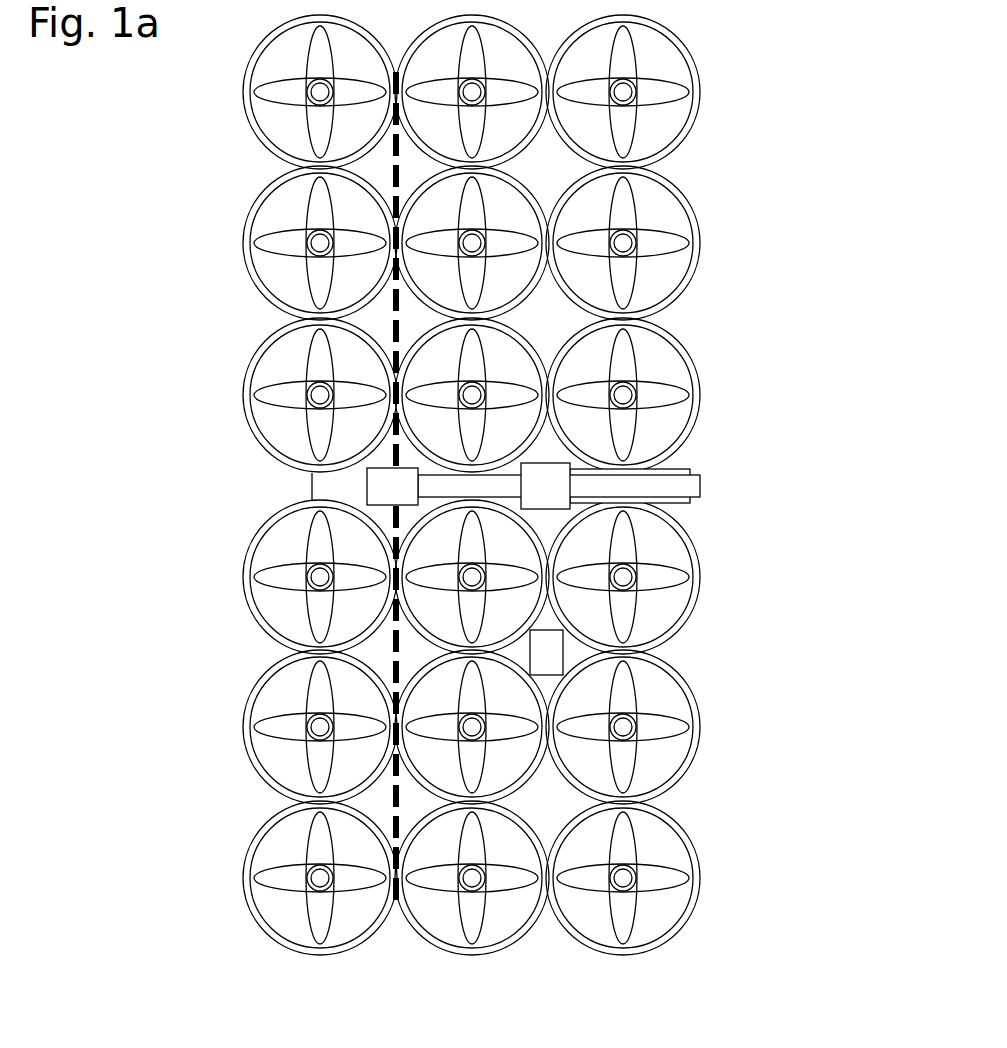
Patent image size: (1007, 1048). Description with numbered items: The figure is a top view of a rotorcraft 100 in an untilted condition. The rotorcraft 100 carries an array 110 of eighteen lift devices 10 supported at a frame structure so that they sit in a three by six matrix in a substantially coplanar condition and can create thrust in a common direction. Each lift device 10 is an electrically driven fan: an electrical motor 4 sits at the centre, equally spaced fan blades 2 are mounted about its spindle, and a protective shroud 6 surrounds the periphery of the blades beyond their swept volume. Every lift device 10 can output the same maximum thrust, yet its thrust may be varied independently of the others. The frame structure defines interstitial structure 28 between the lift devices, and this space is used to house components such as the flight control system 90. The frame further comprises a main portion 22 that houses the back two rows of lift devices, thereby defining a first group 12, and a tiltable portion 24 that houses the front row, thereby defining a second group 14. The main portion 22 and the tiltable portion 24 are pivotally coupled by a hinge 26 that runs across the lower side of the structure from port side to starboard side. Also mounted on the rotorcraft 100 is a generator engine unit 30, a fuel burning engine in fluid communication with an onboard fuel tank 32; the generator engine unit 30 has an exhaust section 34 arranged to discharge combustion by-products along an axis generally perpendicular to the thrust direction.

The rotorcraft 100 is at (755, 83).
The array 110 is at (198, 14).
The lift device 10 is at (705, 213).
The fan blades 2 is at (665, 243).
The electrical motor 4 is at (627, 250).
The protective shroud 6 is at (662, 305).
The first group 12 is at (700, 968).
The second group 14 is at (392, 968).
The main portion 22 is at (545, 810).
The tiltable portion 24 is at (239, 706).
The hinge 26 is at (393, 145).
The interstitial structure 28 is at (547, 792).
The generator engine unit 30 is at (553, 497).
The fuel tank 32 is at (378, 487).
The exhaust section 34 is at (702, 487).
The flight control system 90 is at (551, 648).